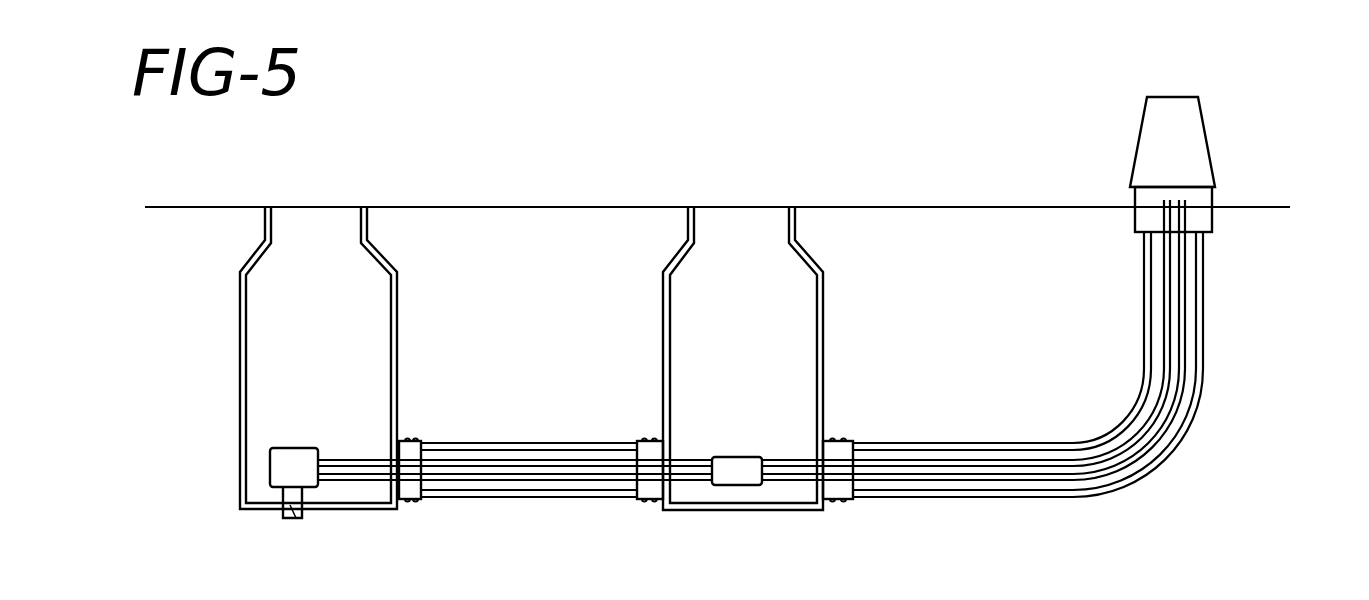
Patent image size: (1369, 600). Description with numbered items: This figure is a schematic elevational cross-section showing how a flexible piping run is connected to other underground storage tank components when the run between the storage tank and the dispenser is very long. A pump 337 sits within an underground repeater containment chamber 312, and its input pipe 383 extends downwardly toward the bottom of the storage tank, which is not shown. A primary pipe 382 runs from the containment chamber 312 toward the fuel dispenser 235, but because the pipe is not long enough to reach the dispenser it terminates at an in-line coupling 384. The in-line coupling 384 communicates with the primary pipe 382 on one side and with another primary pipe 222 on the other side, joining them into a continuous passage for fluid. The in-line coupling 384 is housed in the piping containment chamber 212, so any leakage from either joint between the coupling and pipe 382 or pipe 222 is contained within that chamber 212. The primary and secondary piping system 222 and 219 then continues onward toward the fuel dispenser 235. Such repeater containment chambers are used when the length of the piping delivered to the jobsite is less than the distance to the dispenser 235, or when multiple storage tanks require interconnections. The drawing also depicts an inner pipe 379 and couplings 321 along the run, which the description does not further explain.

The repeater containment chamber 312 is at (400, 305).
The piping containment chamber 212 is at (823, 305).
The fuel dispenser 235 is at (1205, 130).
The pump 337 is at (292, 448).
The input pipe 383 is at (292, 512).
The inner tube 379 is at (510, 500).
The primary pipe 382 is at (528, 465).
The coupling 321 is at (432, 448).
The in-line coupling 384 is at (736, 487).
The primary pipe 222 is at (988, 478).
The secondary piping 219 is at (1110, 500).